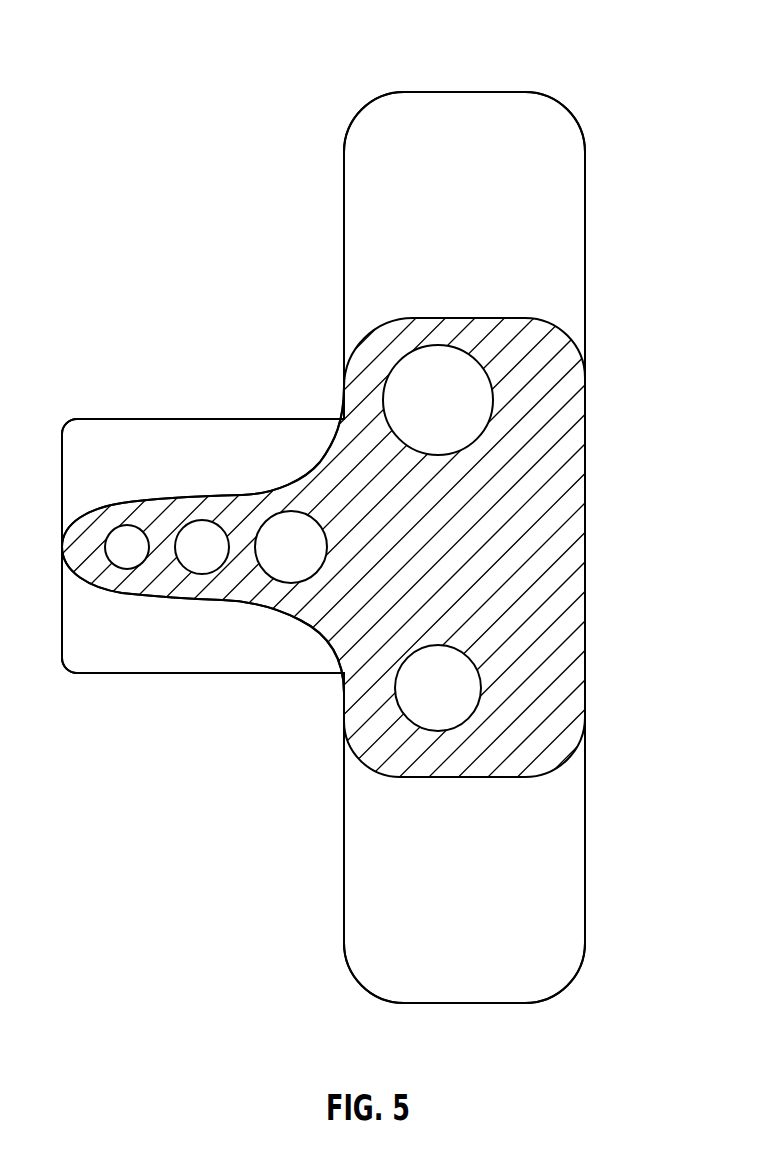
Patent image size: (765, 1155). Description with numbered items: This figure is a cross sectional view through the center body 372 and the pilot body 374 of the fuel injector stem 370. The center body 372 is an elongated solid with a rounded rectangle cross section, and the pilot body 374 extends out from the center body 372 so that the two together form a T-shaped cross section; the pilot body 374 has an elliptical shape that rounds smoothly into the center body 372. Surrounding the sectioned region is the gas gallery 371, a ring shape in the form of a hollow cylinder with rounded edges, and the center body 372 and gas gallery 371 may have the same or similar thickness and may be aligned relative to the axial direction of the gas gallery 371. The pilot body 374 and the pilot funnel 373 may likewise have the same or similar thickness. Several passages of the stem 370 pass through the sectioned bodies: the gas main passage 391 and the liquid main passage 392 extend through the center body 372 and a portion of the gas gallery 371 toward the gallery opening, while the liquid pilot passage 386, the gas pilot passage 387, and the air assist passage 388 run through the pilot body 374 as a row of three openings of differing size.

The stem 370 is at (167, 68).
The gas gallery 371 is at (455, 112).
The center body 372 is at (572, 528).
The pilot funnel 373 is at (162, 419).
The pilot body 374 is at (205, 587).
The liquid pilot passage 386 is at (285, 530).
The gas pilot passage 387 is at (200, 530).
The air assist passage 388 is at (125, 555).
The gas main passage 391 is at (438, 720).
The liquid main passage 392 is at (438, 365).